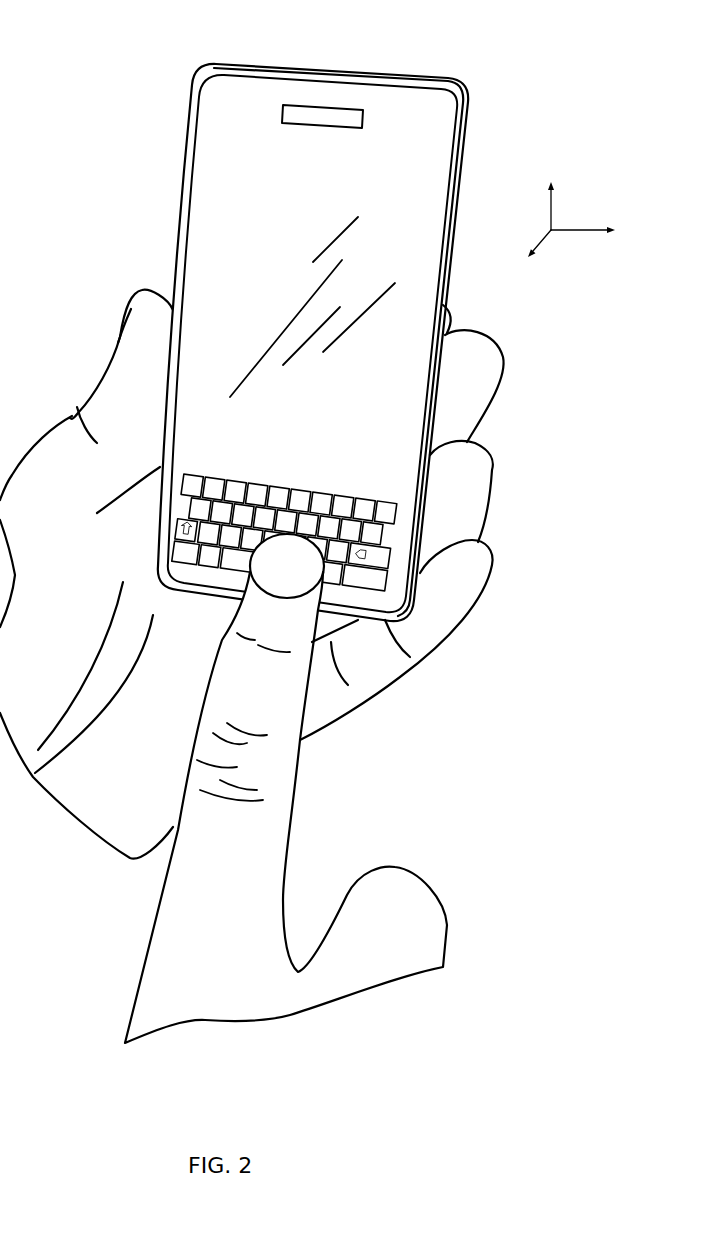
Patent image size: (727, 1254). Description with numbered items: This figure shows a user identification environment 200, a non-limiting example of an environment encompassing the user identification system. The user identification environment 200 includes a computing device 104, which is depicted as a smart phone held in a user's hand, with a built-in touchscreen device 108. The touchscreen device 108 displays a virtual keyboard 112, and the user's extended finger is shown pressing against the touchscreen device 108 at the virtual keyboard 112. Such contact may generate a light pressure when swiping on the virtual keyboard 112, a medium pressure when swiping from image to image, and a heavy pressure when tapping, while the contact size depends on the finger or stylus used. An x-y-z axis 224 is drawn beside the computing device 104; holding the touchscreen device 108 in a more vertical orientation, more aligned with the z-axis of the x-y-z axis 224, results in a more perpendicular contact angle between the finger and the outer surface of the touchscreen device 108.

The user identification environment 200 is at (325, 533).
The computing device 104 is at (307, 342).
The touchscreen device 108 is at (247, 303).
The virtual keyboard 112 is at (390, 494).
The x-y-z axis 224 is at (600, 188).